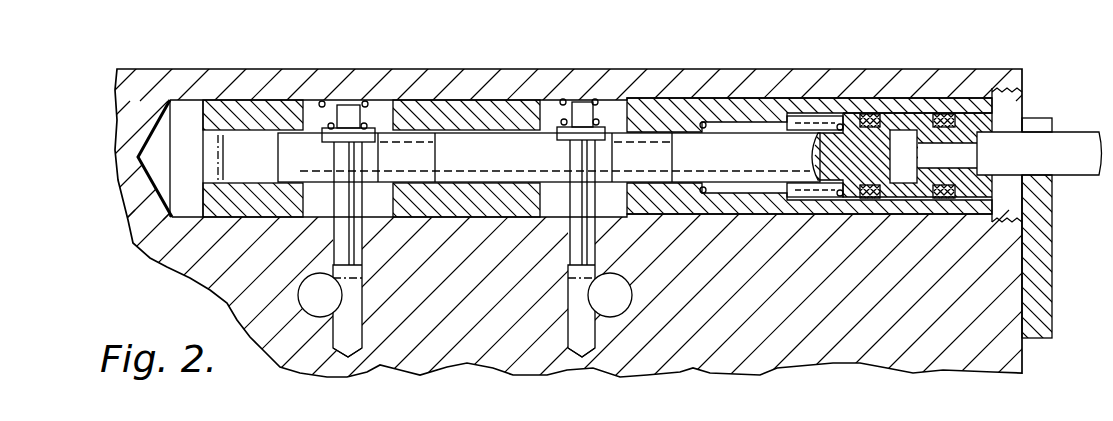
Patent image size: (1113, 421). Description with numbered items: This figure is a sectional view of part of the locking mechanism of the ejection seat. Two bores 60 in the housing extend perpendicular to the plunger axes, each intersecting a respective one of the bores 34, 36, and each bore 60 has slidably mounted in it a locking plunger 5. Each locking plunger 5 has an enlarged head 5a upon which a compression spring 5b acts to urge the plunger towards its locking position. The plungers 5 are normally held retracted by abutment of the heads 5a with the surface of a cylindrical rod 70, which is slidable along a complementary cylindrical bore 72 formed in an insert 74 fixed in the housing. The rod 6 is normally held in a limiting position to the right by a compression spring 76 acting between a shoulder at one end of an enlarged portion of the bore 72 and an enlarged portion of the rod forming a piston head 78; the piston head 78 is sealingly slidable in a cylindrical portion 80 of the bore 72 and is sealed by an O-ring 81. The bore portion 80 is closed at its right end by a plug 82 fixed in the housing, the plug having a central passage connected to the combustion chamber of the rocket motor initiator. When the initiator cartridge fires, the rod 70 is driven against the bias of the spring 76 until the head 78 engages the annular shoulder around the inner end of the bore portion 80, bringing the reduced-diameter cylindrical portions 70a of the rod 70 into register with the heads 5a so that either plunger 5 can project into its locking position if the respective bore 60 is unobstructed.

The locking plunger 5 is at (336, 232).
The enlarged head 5a is at (350, 128).
The compression spring 5b is at (322, 101).
The rod 6 is at (728, 154).
The bore 34 is at (305, 310).
The bore 36 is at (608, 314).
The bore 60 is at (357, 349).
The cylindrical rod 70 is at (687, 143).
The cylindrical portion of reduced diameter 70a is at (623, 148).
The cylindrical bore 72 is at (410, 136).
The insert 74 is at (745, 107).
The compression spring 76 is at (838, 197).
The piston head 78 is at (870, 167).
The cylindrical portion of the bore 80 is at (818, 122).
The O-ring 81 is at (868, 115).
The plug 82 is at (1010, 110).